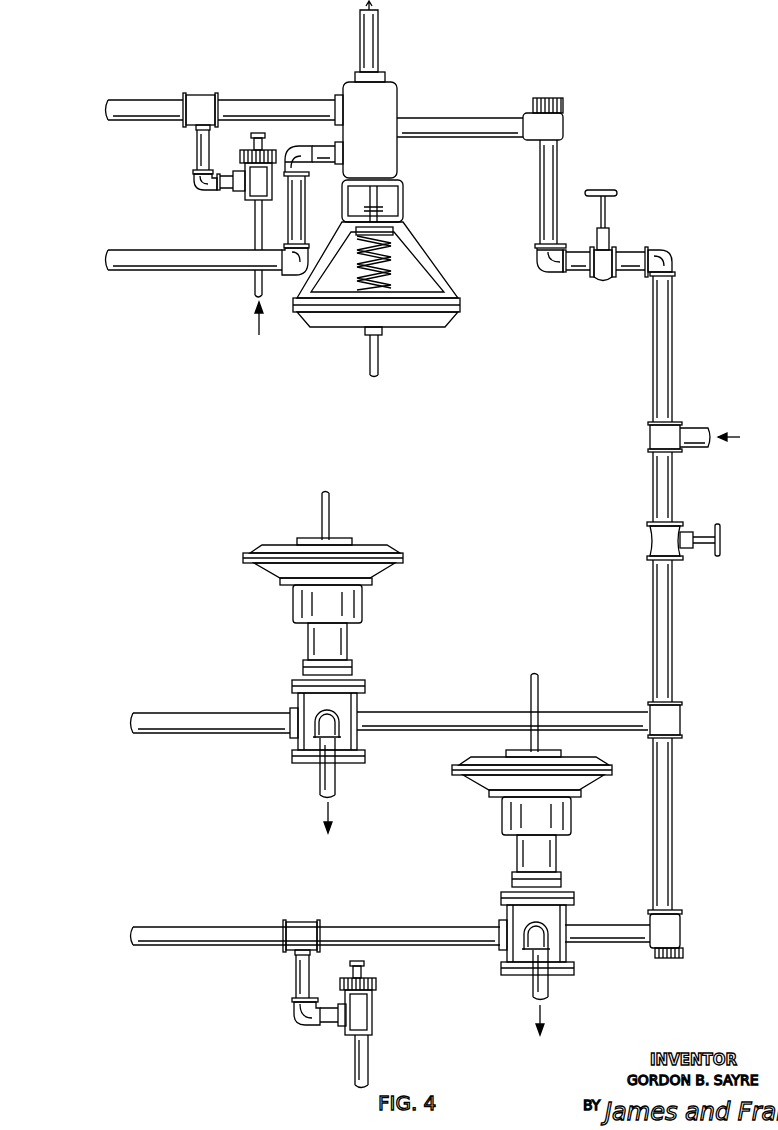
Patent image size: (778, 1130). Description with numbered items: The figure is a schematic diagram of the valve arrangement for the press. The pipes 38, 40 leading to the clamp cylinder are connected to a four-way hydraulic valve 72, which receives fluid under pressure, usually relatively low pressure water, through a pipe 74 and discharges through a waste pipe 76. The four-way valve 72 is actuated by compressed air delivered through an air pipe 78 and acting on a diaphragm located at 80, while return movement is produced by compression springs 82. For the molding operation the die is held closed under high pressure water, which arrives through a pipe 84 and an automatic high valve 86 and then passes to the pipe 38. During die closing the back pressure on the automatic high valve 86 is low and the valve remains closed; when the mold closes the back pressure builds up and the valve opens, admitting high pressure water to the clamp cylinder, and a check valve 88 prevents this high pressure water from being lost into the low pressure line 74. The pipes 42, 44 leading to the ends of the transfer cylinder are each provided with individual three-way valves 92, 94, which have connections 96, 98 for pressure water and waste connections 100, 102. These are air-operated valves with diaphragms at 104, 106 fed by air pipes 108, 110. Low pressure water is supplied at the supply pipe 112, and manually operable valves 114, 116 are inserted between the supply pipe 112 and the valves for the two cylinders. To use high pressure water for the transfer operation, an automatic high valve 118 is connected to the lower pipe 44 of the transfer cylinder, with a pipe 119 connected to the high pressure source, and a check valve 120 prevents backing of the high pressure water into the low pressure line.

The pipe 38 is at (153, 100).
The pipe 40 is at (157, 252).
The pipe 42 is at (173, 713).
The lower pipe 44 is at (180, 927).
The four-way hydraulic valve 72 is at (397, 105).
The pipe 74 is at (462, 120).
The waste pipe 76 is at (379, 45).
The air pipe 78 is at (379, 352).
The diaphragm 80 is at (462, 305).
The compression springs 82 is at (388, 262).
The pipe 84 is at (250, 292).
The automatic high valve 86 is at (267, 150).
The check valve 88 is at (565, 120).
The three-way valve 92 is at (366, 700).
The three-way valve 94 is at (575, 908).
The connection 96 is at (480, 707).
The connection 98 is at (626, 944).
The waste connection 100 is at (321, 782).
The waste connection 102 is at (534, 999).
The diaphragm 104 is at (405, 560).
The diaphragm 106 is at (614, 768).
The air pipe 108 is at (331, 512).
The air pipe 110 is at (540, 692).
The supply pipe 112 is at (685, 428).
The manually operable valve 114 is at (612, 238).
The manually operable valve 116 is at (682, 557).
The automatic high valve 118 is at (374, 990).
The pipe 119 is at (369, 1048).
The check valve 120 is at (685, 953).